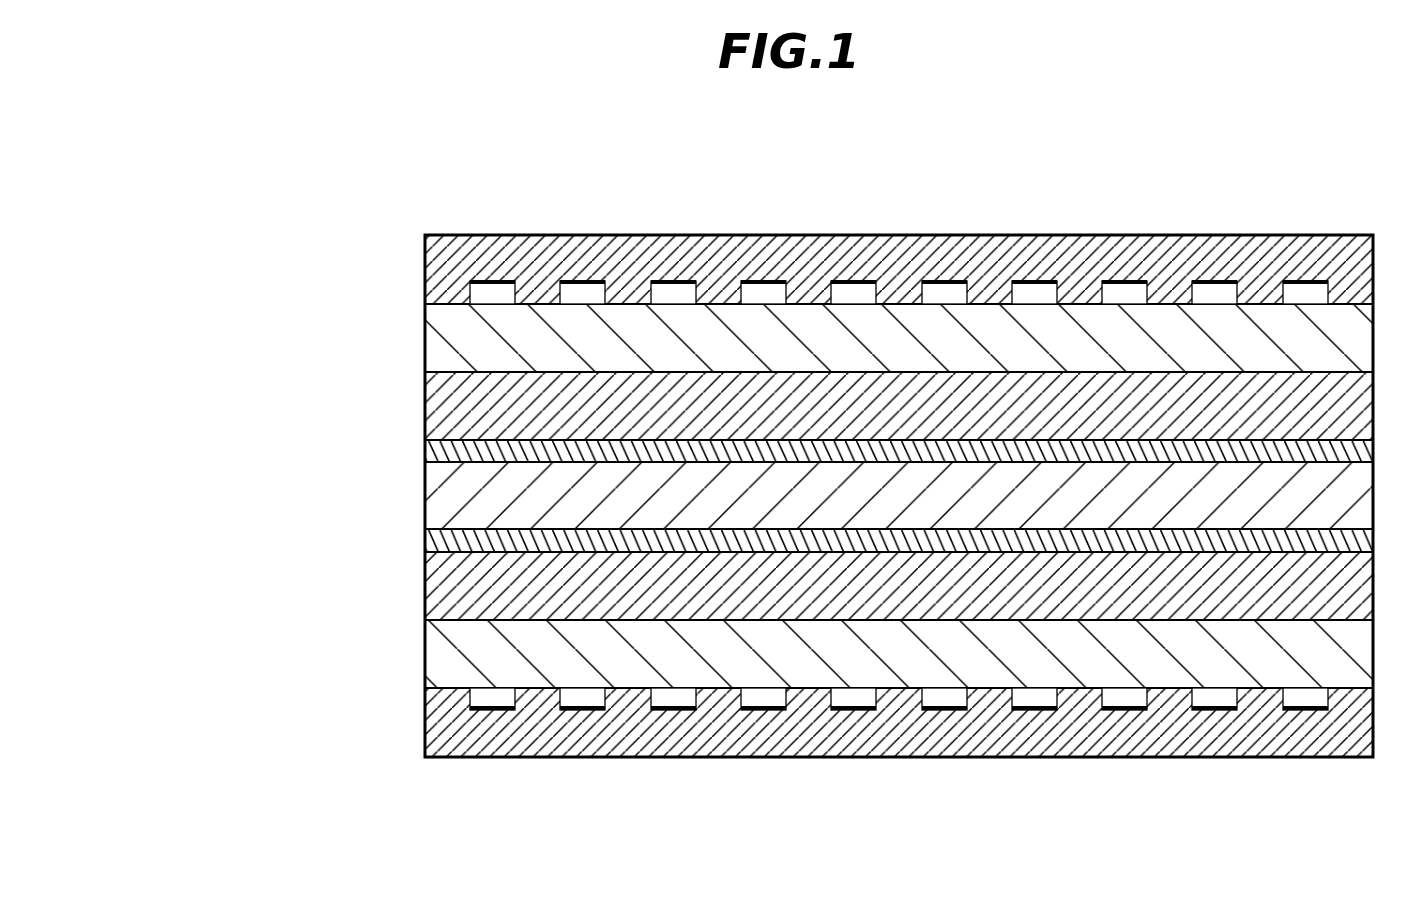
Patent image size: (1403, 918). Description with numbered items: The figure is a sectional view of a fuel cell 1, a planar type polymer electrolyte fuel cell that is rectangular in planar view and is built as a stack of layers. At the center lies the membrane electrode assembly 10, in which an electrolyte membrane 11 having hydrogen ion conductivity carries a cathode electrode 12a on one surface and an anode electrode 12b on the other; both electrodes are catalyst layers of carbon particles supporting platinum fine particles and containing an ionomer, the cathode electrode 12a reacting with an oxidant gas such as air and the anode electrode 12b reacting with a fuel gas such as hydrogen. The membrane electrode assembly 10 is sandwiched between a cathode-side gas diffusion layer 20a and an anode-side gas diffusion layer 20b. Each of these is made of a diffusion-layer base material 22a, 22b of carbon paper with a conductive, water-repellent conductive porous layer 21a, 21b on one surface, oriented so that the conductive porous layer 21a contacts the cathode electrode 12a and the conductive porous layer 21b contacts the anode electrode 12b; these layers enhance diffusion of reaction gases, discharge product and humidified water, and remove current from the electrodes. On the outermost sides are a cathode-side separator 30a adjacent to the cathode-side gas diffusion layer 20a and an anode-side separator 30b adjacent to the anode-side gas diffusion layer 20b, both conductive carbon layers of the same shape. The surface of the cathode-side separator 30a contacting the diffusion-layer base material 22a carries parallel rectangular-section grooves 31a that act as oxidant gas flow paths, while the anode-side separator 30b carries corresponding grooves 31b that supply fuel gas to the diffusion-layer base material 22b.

The fuel cell 1 is at (378, 218).
The membrane electrode assembly 10 is at (827, 498).
The electrolyte membrane 11 is at (436, 496).
The cathode electrode 12a is at (430, 451).
The anode electrode 12b is at (851, 545).
The cathode-side gas diffusion layer 20a is at (786, 372).
The anode-side gas diffusion layer 20b is at (786, 620).
The conductive porous layer 21a is at (438, 413).
The conductive porous layer 21b is at (438, 596).
The diffusion-layer base material 22a is at (438, 348).
The diffusion-layer base material 22b is at (438, 657).
The cathode-side separator 30a is at (437, 268).
The anode-side separator 30b is at (438, 731).
The grooves 31a is at (497, 295).
The grooves 31b is at (493, 703).